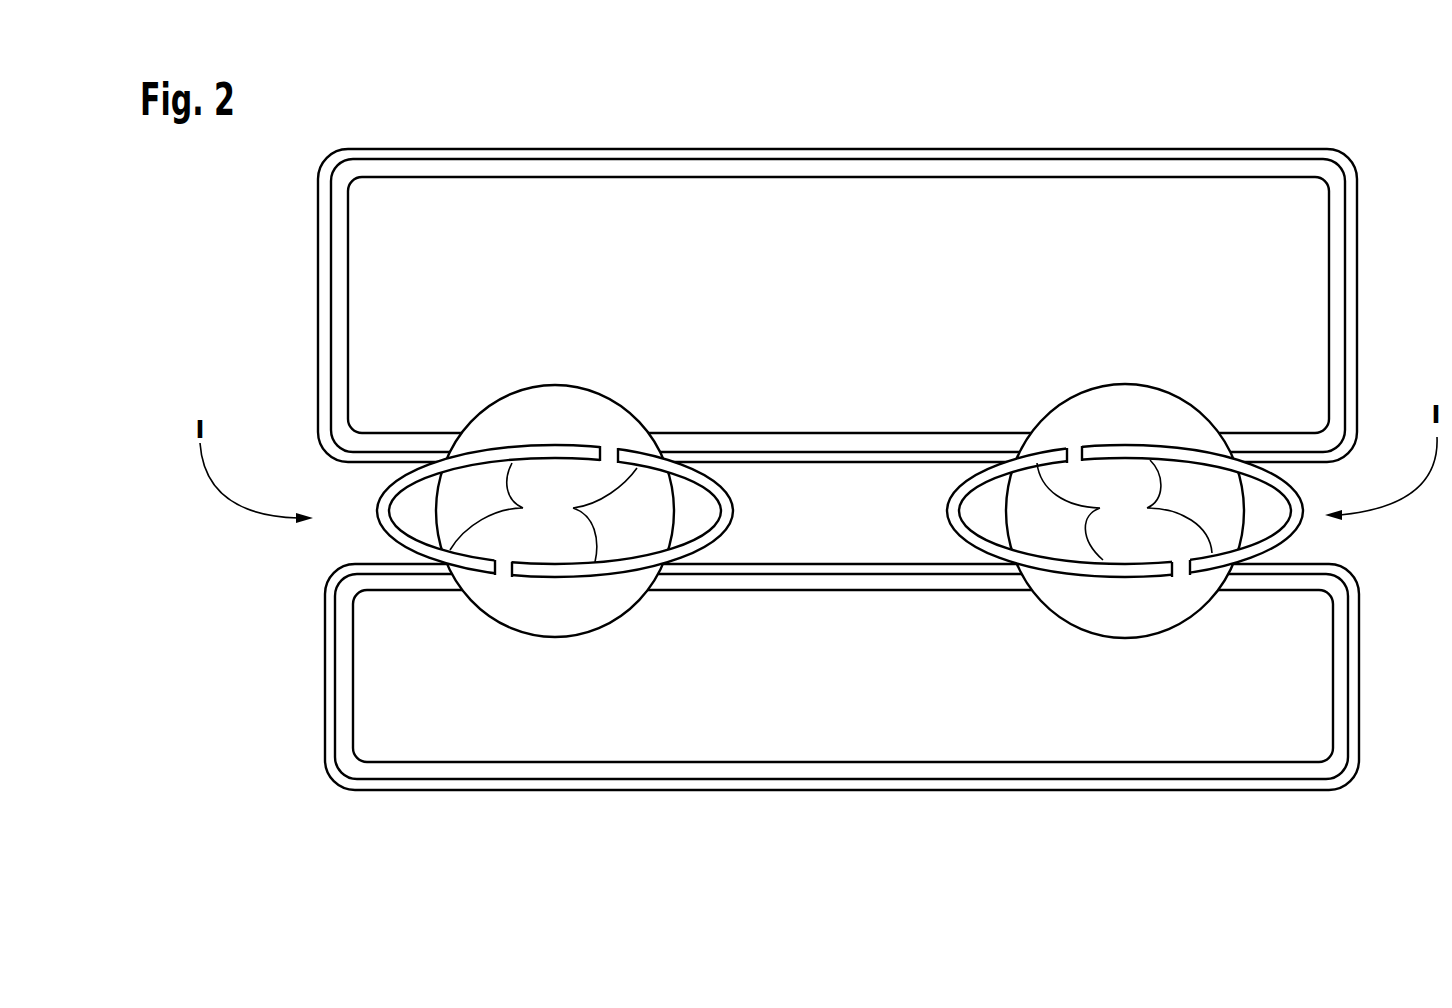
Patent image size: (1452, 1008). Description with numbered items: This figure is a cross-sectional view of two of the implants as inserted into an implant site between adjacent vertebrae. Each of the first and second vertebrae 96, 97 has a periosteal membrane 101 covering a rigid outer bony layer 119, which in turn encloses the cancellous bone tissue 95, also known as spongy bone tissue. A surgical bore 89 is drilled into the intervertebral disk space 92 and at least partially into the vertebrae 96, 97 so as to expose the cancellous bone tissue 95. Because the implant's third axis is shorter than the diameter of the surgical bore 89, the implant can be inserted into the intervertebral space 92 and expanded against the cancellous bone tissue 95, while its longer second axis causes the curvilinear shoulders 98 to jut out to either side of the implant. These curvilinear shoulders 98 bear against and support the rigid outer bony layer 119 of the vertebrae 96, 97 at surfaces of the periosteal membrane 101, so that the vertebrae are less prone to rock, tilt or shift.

The surgical bore 89 is at (840, 461).
The intervertebral disk space 92 is at (818, 502).
The cancellous bone tissue 95 is at (768, 479).
The first vertebra 96 is at (264, 328).
The second vertebra 97 is at (264, 652).
The curvilinear shoulder 98 is at (831, 511).
The periosteal membrane 101 is at (738, 153).
The rigid outer bony layer 119 is at (547, 167).